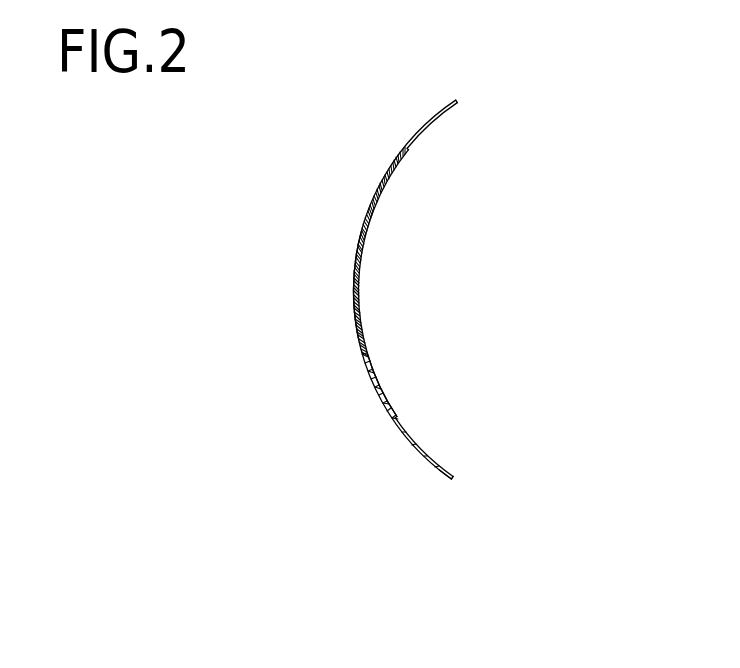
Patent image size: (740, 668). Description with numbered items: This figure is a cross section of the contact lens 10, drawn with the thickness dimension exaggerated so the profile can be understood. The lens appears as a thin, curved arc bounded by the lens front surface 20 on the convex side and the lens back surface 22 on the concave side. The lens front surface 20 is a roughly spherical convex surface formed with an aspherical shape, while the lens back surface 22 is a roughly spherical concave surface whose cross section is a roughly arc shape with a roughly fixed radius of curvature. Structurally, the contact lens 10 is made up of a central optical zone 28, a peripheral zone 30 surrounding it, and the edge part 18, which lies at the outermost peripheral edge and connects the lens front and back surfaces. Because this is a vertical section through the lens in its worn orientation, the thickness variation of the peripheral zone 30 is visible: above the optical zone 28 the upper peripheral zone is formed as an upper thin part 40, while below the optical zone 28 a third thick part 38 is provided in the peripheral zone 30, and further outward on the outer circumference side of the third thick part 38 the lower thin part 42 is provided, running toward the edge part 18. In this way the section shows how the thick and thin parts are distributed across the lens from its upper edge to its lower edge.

The contact lens 10 is at (541, 123).
The edge part 18 is at (450, 484).
The lens front surface 20 is at (370, 206).
The lens back surface 22 is at (397, 171).
The optical zone 28 is at (344, 288).
The peripheral zone 30 is at (390, 445).
The third thick part 38 is at (382, 403).
The upper thin part 40 is at (403, 148).
The lower thin part 42 is at (417, 447).